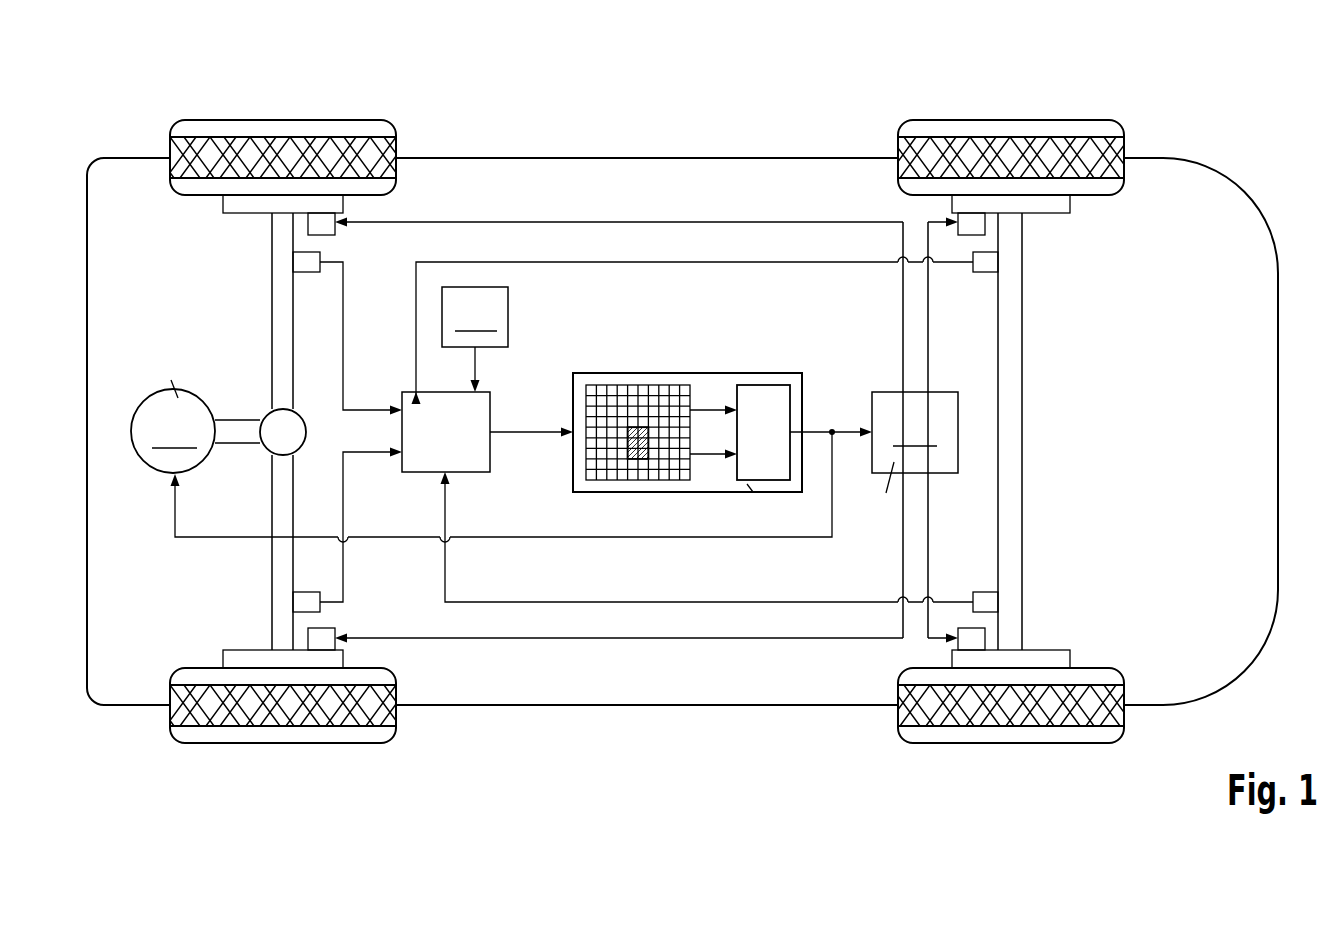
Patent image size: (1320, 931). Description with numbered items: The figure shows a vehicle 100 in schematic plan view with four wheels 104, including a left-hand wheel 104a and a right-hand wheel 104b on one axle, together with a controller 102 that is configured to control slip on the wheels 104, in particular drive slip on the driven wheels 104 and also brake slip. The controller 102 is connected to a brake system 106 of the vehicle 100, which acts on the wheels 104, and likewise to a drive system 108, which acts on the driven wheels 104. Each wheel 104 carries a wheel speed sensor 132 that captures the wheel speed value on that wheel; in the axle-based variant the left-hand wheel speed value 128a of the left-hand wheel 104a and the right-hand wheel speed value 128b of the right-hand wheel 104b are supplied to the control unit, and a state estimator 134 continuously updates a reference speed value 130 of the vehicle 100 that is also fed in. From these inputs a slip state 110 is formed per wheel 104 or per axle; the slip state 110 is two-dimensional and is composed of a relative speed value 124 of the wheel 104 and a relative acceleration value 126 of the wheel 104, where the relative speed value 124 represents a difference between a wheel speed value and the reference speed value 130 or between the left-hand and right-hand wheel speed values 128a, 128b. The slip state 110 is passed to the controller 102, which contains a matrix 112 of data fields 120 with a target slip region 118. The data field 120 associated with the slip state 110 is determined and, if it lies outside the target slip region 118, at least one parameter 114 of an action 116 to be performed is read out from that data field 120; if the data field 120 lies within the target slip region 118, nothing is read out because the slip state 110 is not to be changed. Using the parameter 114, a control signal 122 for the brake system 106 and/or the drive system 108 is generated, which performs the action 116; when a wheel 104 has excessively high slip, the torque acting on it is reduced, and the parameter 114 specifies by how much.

The vehicle 100 is at (646, 157).
The controller 102 is at (773, 373).
The wheels 104 is at (1008, 118).
The left-hand wheel 104a is at (282, 748).
The right-hand wheel 104b is at (282, 118).
The brake system 106 is at (646, 431).
The drive system 108 is at (218, 414).
The slip state 110 is at (527, 479).
The matrix 112 is at (636, 399).
The parameter 114 is at (706, 410).
The action 116 is at (705, 455).
The target slip region 118 is at (640, 462).
The data field 120 is at (598, 385).
The control signal 122 is at (826, 432).
The relative speed value 124 is at (527, 479).
The relative acceleration value 126 is at (526, 434).
The left-hand wheel speed value 128a is at (363, 453).
The right-hand wheel speed value 128b is at (362, 409).
The reference speed value 130 is at (478, 356).
The wheel speed sensor 132 is at (307, 272).
The state estimator 134 is at (475, 317).